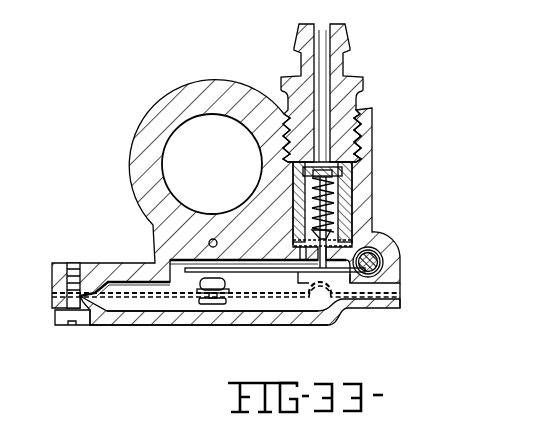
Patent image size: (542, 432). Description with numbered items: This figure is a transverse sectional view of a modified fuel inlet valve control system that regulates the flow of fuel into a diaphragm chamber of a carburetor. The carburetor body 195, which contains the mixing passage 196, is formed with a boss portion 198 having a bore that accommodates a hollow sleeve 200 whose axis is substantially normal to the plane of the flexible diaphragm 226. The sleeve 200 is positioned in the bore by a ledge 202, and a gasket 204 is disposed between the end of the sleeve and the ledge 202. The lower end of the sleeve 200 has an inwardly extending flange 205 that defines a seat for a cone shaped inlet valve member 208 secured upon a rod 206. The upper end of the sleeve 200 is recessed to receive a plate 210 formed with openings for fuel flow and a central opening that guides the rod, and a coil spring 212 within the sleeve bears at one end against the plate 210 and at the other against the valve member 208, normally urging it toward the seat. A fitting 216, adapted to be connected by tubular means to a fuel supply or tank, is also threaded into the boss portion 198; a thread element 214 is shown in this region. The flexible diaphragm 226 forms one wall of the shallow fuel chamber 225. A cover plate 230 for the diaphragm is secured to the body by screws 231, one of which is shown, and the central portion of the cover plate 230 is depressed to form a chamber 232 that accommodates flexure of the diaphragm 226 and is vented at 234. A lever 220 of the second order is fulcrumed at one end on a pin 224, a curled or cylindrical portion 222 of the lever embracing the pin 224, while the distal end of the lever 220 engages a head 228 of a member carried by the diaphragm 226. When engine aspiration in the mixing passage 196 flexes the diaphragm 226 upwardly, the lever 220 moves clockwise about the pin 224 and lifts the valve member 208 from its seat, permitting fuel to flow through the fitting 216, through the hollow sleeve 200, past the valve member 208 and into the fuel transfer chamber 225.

The carburetor body 195 is at (178, 86).
The mixing passage 196 is at (232, 164).
The boss portion 198 is at (373, 118).
The hollow sleeve 200 is at (340, 197).
The ledge 202 is at (348, 264).
The gasket 204 is at (327, 237).
The inwardly extending flange 205 is at (300, 243).
The rod 206 is at (316, 260).
The cone shaped inlet valve member 208 is at (333, 212).
The plate 210 is at (372, 135).
The coil spring 212 is at (345, 172).
The stem 214 is at (347, 101).
The fitting 216 is at (351, 77).
The lever 220 is at (323, 318).
The curled or cylindrical portion 222 is at (381, 258).
The pin 224 is at (371, 265).
The shallow fuel chamber 225 is at (131, 282).
The flexible diaphragm 226 is at (143, 297).
The head 228 is at (184, 300).
The cover plate 230 is at (108, 327).
The screws 231 is at (65, 326).
The chamber 232 is at (286, 308).
The vent 234 is at (220, 322).